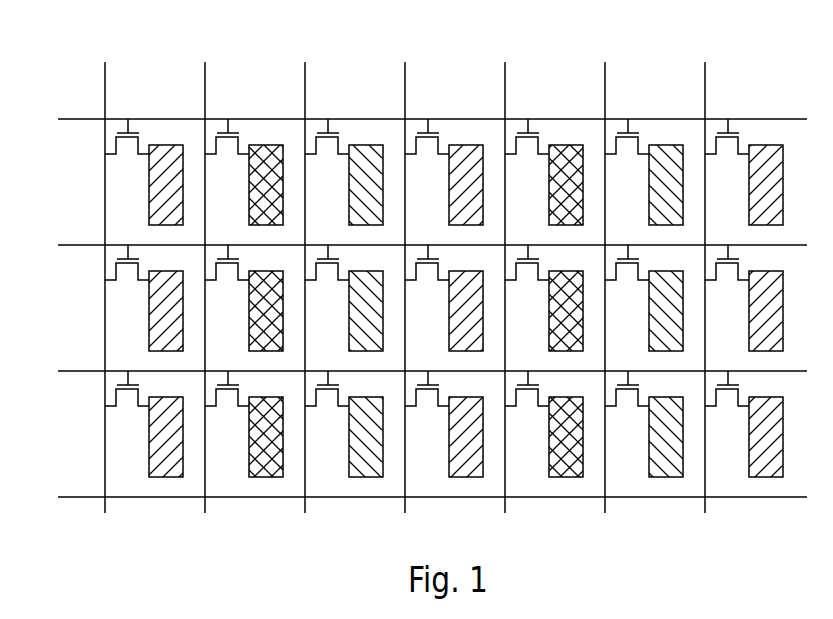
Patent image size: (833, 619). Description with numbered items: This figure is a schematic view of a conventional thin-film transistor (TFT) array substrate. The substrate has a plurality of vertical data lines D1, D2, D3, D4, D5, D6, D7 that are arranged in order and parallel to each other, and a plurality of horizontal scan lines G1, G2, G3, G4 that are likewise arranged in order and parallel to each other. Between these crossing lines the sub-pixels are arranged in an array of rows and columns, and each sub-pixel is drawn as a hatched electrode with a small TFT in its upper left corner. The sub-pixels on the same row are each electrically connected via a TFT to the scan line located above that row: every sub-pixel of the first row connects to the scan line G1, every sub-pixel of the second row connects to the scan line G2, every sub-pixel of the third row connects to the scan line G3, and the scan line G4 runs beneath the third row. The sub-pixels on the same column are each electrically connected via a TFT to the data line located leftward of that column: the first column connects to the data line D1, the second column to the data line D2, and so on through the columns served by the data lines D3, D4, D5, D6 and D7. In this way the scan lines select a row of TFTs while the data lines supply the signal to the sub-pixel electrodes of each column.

The data line D1 is at (112, 265).
The data line D2 is at (211, 265).
The data line D3 is at (311, 265).
The data line D4 is at (409, 265).
The data line D5 is at (509, 265).
The data line D6 is at (606, 265).
The data line D7 is at (700, 265).
The scan line G1 is at (408, 123).
The scan line G2 is at (408, 249).
The scan line G3 is at (408, 375).
The scan line G4 is at (408, 501).